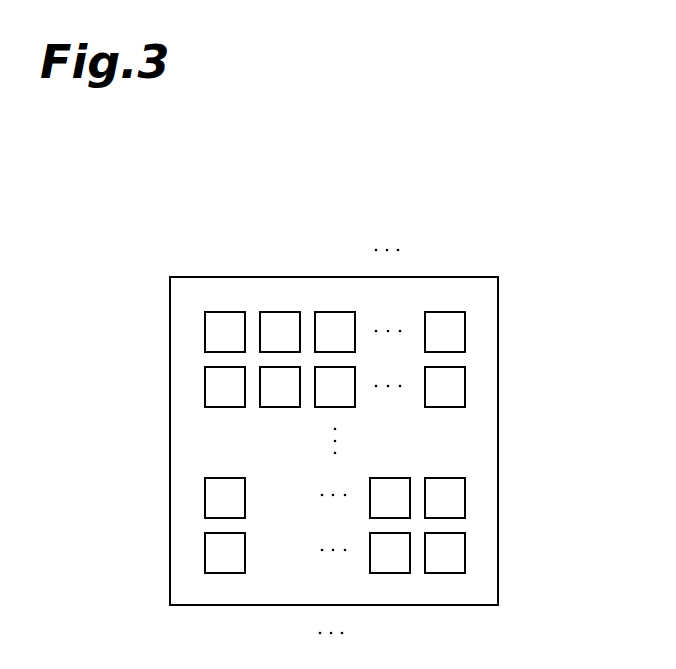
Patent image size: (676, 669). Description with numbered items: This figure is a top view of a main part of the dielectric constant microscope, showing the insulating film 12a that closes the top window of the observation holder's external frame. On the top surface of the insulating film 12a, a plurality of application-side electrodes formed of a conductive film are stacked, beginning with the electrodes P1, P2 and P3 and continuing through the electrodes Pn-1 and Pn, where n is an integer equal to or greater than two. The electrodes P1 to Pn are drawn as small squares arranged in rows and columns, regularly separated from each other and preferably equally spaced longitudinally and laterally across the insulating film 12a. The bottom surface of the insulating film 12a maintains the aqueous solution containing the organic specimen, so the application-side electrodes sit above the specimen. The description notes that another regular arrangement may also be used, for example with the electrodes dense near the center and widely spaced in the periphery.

The insulating film 12a is at (498, 347).
The application-side electrode P1 is at (225, 312).
The application-side electrode P2 is at (278, 312).
The application-side electrode P3 is at (333, 312).
The application-side electrode Pn-1 is at (390, 573).
The application-side electrode Pn is at (445, 573).